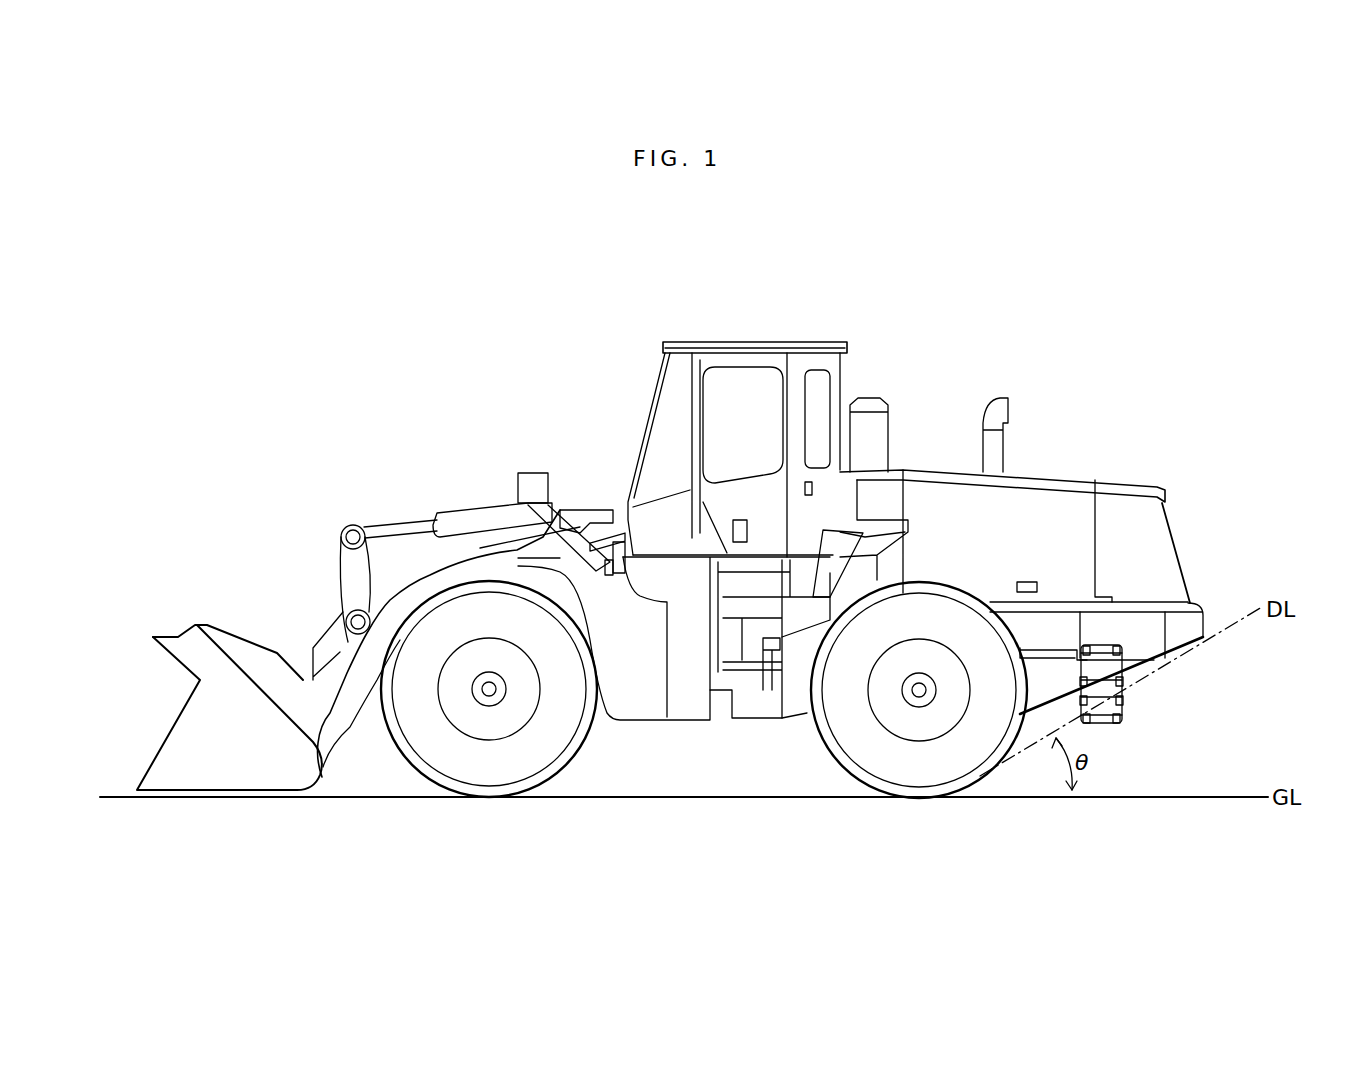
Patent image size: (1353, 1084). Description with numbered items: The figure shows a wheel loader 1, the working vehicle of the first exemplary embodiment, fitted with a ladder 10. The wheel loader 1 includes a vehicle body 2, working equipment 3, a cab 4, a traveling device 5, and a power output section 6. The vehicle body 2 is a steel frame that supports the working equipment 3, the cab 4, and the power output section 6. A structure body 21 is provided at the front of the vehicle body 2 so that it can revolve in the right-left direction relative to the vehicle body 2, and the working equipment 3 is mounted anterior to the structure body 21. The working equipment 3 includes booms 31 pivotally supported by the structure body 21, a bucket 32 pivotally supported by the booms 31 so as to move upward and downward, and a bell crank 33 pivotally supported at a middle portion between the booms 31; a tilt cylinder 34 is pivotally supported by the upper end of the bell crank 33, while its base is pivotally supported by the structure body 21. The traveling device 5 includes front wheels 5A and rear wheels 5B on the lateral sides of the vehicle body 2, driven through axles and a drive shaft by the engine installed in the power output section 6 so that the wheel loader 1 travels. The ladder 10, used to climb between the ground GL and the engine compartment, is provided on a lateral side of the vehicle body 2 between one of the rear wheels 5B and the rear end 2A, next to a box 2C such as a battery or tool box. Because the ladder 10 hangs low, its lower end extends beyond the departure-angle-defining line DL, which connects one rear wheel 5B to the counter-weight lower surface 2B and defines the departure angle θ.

The wheel loader 1 is at (846, 225).
The vehicle body 2 is at (1129, 729).
The rear end 2A is at (1193, 652).
The counter-weight lower surface 2B is at (1205, 627).
The box 2C is at (1127, 620).
The working equipment 3 is at (509, 411).
The cab 4 is at (755, 338).
The traveling device 5 is at (1040, 797).
The front wheels 5A is at (497, 778).
The rear wheels 5B is at (925, 778).
The power output section 6 is at (1072, 448).
The ladder 10 is at (1125, 698).
The structure body 21 is at (642, 700).
The booms 31 is at (482, 566).
The bucket 32 is at (183, 627).
The bell crank 33 is at (340, 572).
The tilt cylinder 34 is at (482, 515).